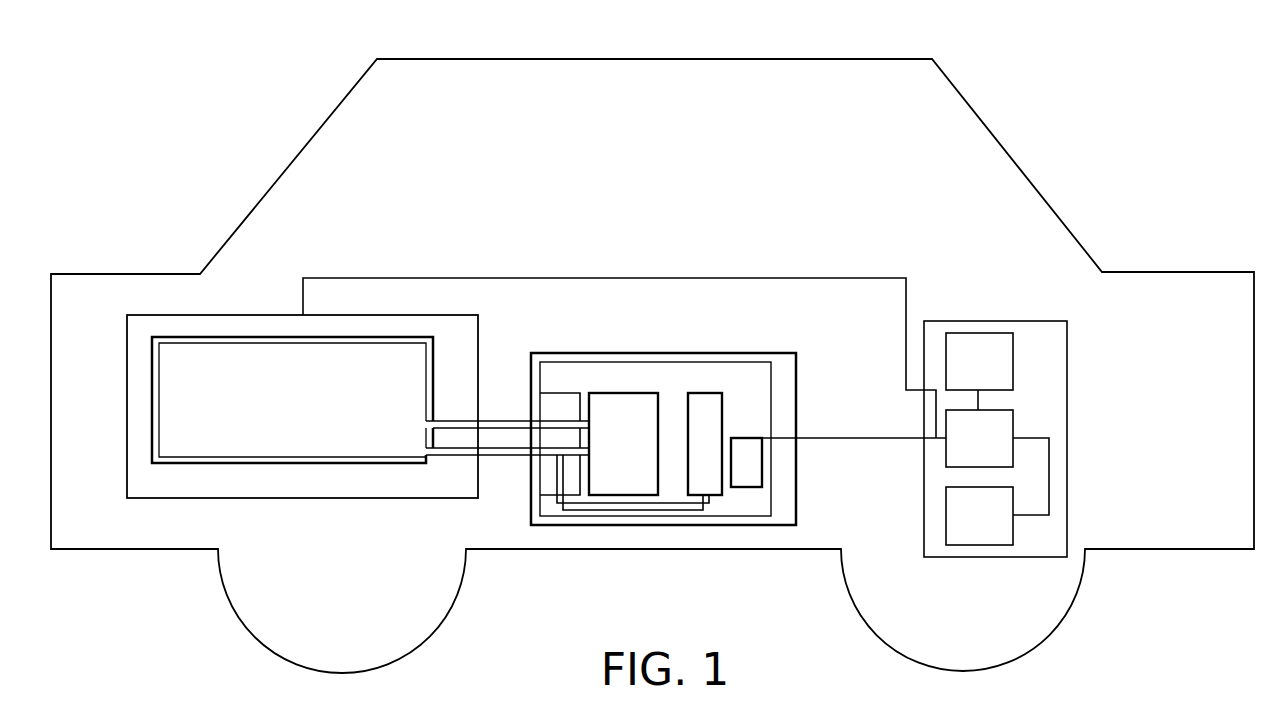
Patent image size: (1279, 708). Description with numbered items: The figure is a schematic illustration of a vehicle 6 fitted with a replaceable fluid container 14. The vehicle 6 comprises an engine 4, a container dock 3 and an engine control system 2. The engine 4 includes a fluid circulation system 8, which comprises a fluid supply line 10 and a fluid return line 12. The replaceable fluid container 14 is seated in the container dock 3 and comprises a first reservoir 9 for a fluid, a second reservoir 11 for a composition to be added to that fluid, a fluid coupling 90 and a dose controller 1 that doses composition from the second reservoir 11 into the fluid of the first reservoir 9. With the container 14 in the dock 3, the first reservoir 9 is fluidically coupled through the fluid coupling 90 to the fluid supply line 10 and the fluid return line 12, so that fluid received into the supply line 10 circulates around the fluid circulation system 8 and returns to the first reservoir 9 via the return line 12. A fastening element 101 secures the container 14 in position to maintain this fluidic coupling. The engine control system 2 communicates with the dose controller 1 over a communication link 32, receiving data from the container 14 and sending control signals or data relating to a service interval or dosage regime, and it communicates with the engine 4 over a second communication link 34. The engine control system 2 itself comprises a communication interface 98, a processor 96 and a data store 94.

The vehicle 6 is at (672, 57).
The second communication link 34 is at (753, 278).
The fluid circulation system 8 is at (218, 457).
The engine 4 is at (291, 412).
The fluid return line 12 is at (458, 420).
The fluid supply line 10 is at (451, 458).
The fluid coupling 90 is at (550, 392).
The fastening element 101 is at (610, 346).
The container dock 3 is at (776, 382).
The replaceable fluid container 14 is at (735, 393).
The first reservoir 9 is at (616, 453).
The second reservoir 11 is at (692, 453).
The dose controller 1 is at (739, 474).
The communication link 32 is at (843, 441).
The engine control system 2 is at (1035, 352).
The processor 96 is at (967, 372).
The communication interface 98 is at (967, 449).
The data store 94 is at (967, 527).